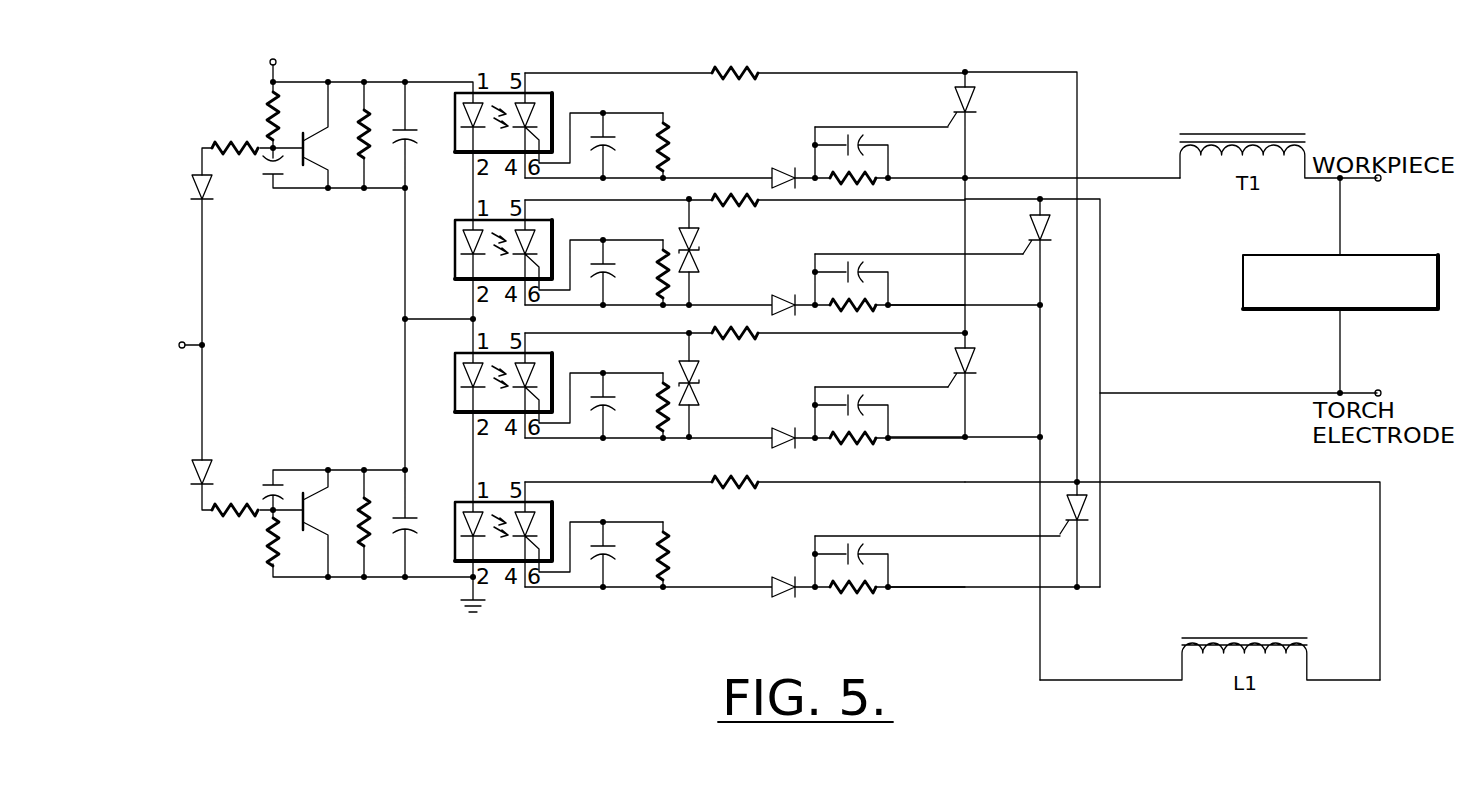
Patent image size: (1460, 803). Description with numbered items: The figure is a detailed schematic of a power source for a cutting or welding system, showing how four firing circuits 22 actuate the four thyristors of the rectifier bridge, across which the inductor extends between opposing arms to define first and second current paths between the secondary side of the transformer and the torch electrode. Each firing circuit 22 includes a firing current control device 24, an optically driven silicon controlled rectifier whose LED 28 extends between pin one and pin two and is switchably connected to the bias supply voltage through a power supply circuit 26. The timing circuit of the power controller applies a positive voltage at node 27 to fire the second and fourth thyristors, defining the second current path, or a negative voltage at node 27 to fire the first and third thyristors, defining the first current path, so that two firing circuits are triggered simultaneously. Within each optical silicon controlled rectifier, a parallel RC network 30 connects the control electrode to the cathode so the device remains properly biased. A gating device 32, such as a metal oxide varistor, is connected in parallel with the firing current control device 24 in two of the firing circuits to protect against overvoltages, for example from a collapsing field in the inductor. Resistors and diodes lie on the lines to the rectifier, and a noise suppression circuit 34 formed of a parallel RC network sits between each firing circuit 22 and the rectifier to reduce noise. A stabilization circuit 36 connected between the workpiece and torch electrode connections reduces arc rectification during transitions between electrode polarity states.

The firing circuit 22 is at (752, 124).
The firing current control device 24 is at (540, 345).
The power supply circuit 26 is at (346, 379).
The node 27 is at (190, 342).
The LED 28 is at (463, 108).
The parallel RC network 30 is at (645, 169).
The gating device 32 is at (698, 268).
The noise suppression circuit 34 is at (887, 171).
The stabilization circuit 36 is at (1290, 255).